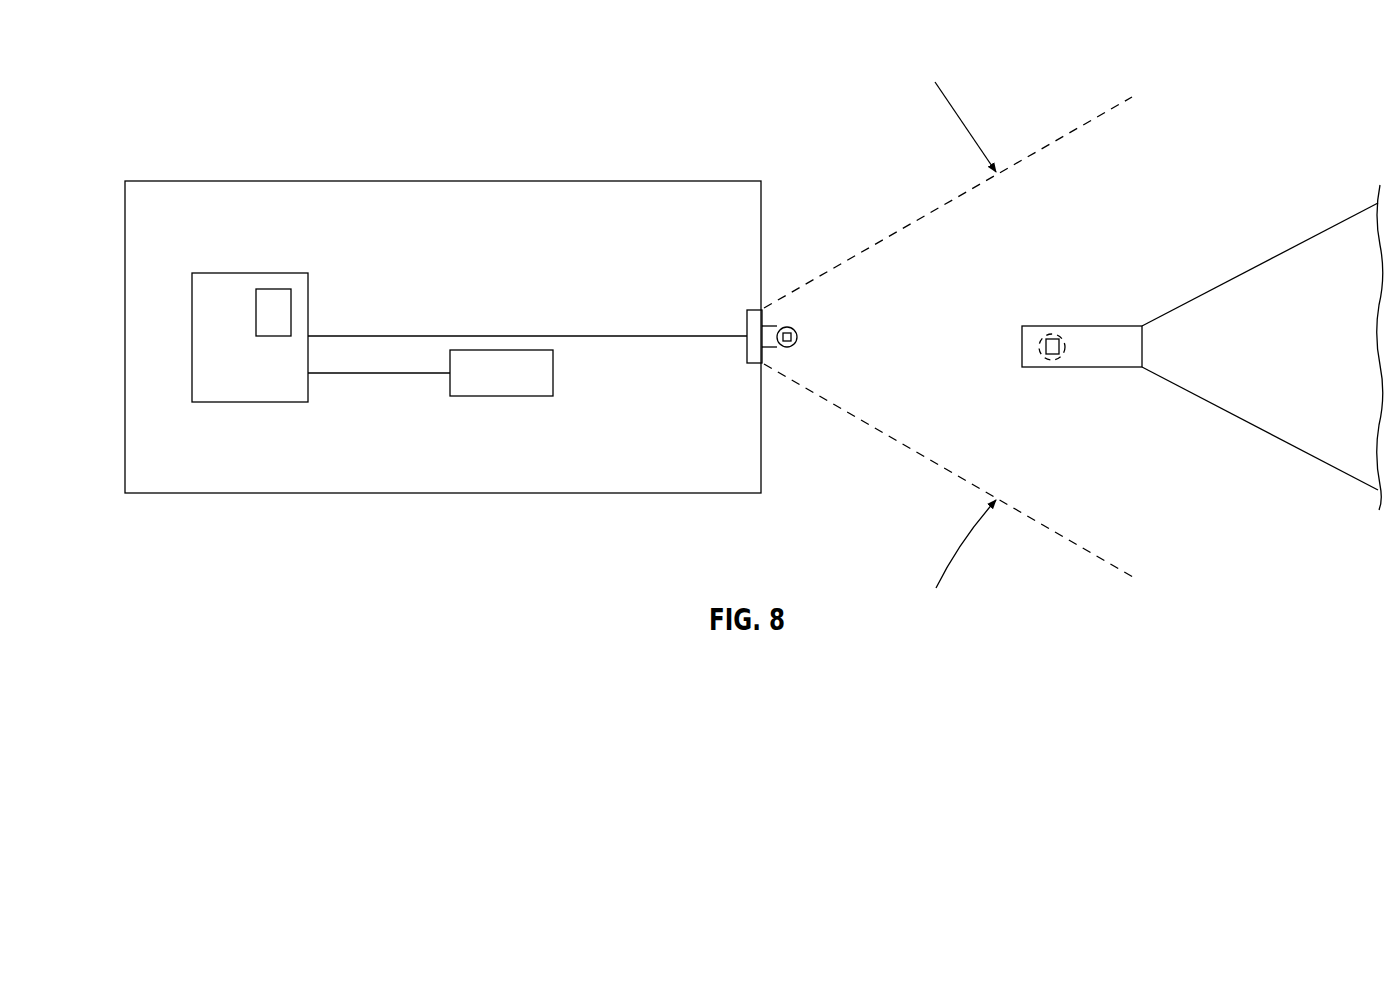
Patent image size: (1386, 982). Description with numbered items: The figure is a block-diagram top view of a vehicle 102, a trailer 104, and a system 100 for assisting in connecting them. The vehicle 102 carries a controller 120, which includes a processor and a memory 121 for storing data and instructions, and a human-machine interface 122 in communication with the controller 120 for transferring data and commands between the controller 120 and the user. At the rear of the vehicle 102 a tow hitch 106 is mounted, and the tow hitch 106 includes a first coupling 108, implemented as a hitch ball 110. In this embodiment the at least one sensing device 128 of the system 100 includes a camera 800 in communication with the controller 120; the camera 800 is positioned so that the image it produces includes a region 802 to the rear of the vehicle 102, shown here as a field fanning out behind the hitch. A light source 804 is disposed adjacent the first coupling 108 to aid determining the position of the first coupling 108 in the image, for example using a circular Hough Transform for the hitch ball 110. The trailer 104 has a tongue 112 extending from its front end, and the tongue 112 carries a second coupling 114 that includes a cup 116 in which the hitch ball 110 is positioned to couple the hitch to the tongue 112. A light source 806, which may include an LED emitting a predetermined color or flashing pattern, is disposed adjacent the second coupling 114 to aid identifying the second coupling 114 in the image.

The system 100 is at (190, 100).
The vehicle 102 is at (190, 181).
The trailer 104 is at (1232, 415).
The tow hitch 106 is at (776, 320).
The first coupling 108 is at (790, 353).
The hitch ball 110 is at (797, 331).
The tongue 112 is at (1100, 323).
The second coupling 114 is at (1057, 372).
The cup 116 is at (1052, 334).
The controller 120 is at (225, 273).
The memory 121 is at (273, 337).
The human-machine interface 122 is at (500, 397).
The sensing device 128 is at (742, 327).
The camera 800 is at (752, 365).
The region 802 is at (958, 105).
The light source 804 is at (797, 344).
The light source 806 is at (1046, 347).